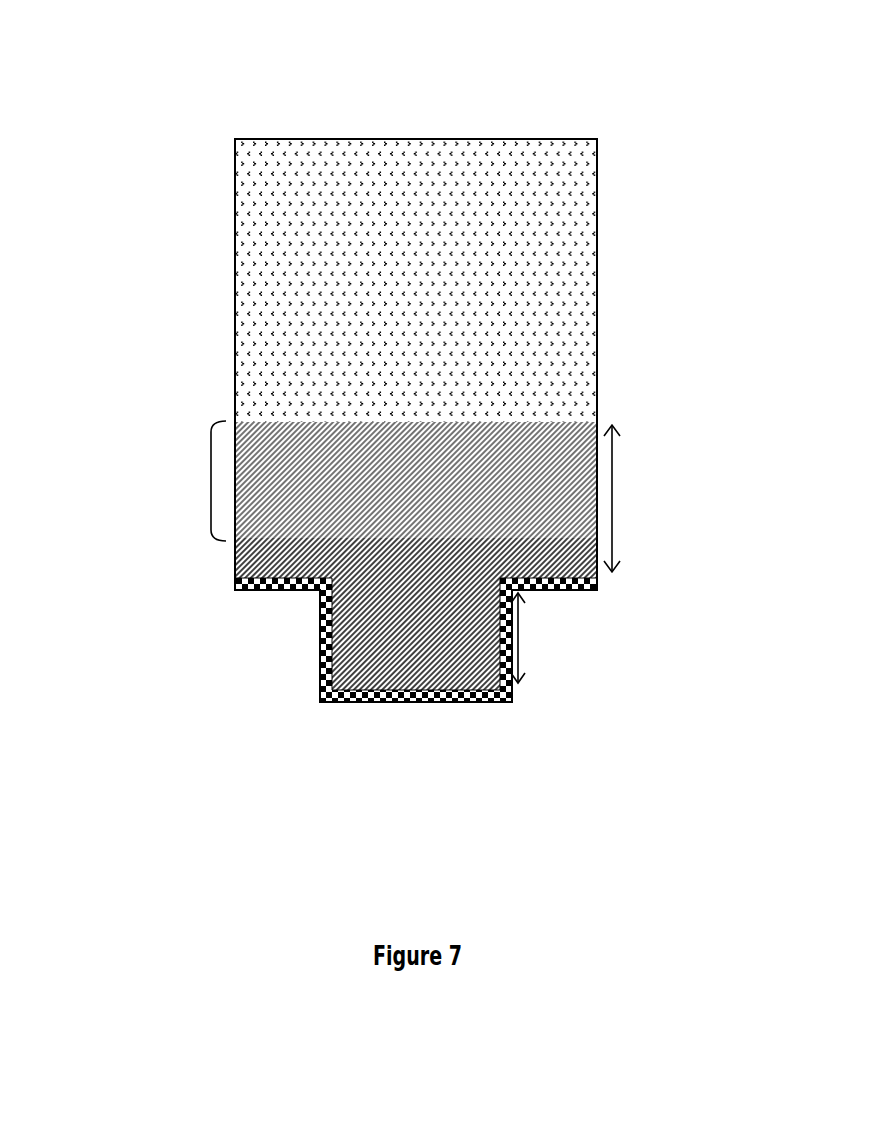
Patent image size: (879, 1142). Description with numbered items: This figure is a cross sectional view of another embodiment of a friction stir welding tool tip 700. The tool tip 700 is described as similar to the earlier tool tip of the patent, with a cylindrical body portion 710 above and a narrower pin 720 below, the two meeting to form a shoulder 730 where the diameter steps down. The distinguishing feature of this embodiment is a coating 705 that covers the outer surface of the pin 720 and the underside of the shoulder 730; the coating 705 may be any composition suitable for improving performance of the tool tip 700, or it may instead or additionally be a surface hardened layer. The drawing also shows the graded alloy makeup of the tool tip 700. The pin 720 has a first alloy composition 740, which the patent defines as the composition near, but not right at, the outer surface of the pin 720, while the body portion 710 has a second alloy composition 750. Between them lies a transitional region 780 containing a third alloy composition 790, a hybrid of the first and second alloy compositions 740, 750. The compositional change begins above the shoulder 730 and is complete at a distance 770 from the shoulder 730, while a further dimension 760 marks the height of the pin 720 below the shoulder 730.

The tool tip 700 is at (716, 108).
The coating 705 is at (353, 695).
The body outline 710 is at (235, 328).
The pin 720 is at (338, 667).
The hatched layer 730 is at (235, 575).
The first alloy composition 740 is at (422, 668).
The top layer 750 is at (432, 362).
The stem height dimension 760 is at (520, 643).
The middle layer height dimension 770 is at (614, 498).
The middle layer bracket 780 is at (211, 483).
The middle layer 790 is at (364, 459).